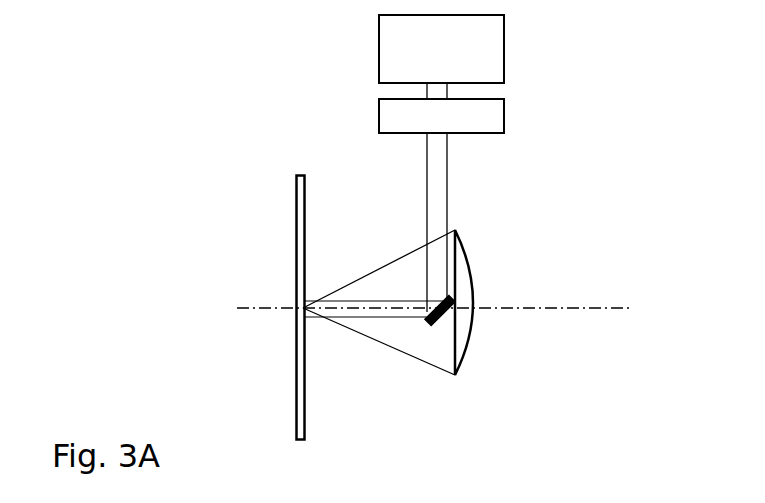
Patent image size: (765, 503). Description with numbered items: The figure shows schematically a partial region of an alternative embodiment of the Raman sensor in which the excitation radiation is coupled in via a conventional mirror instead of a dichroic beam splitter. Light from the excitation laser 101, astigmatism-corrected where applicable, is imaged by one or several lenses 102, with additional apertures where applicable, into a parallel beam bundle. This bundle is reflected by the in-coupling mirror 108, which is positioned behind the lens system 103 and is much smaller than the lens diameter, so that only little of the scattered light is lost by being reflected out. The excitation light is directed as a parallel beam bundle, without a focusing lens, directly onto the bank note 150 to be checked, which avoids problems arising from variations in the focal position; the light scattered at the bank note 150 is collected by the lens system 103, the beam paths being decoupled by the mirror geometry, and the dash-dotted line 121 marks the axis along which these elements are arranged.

The excitation laser 101 is at (500, 45).
The lens 102 is at (500, 113).
The lens system 103 is at (462, 355).
The in-coupling mirror 108 is at (430, 312).
The optical axis 121 is at (548, 310).
The bank note 150 is at (296, 368).